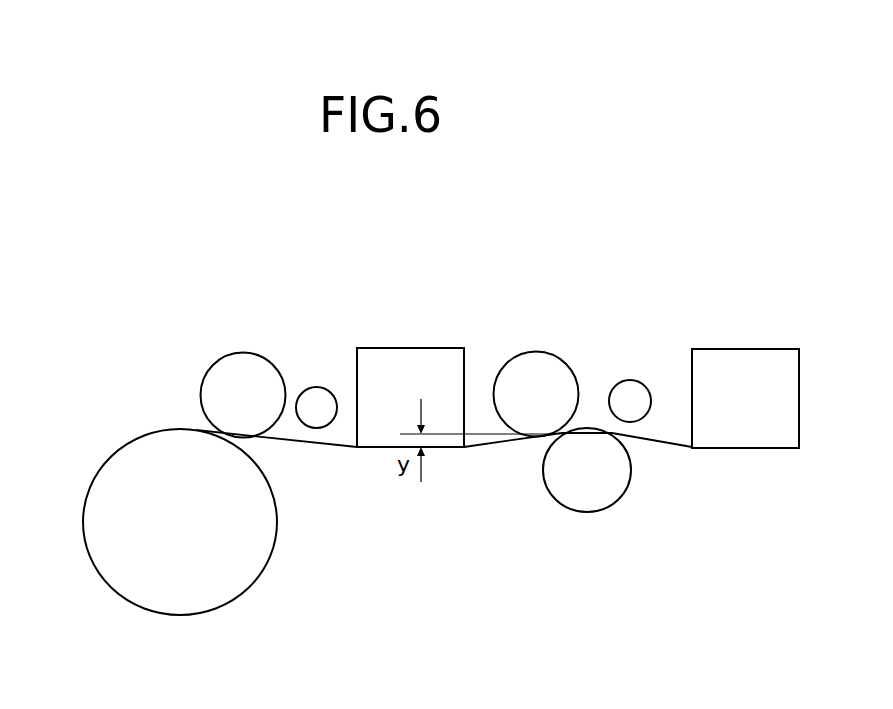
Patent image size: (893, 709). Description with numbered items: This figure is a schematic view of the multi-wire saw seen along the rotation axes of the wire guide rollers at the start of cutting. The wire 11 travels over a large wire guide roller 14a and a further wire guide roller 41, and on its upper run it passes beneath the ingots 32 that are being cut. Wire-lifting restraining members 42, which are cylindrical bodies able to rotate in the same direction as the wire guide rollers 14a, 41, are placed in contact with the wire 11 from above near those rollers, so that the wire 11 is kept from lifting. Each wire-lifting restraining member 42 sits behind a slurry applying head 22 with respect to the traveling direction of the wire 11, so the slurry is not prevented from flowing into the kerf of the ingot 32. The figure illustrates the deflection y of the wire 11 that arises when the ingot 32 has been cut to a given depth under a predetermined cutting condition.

The wire 11 is at (325, 448).
The wire guide roller 14a is at (119, 597).
The slurry applying head 22 is at (320, 387).
The ingot 32 is at (420, 348).
The wire guide roller 41 is at (547, 488).
The wire-lifting restraining member 42 is at (228, 354).